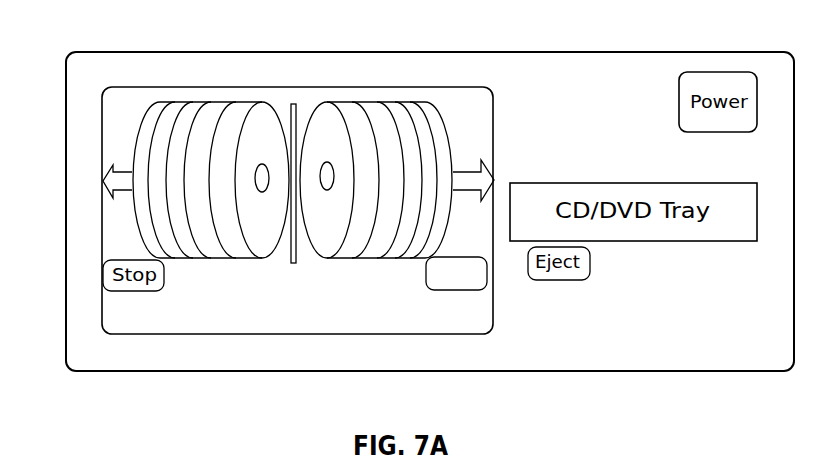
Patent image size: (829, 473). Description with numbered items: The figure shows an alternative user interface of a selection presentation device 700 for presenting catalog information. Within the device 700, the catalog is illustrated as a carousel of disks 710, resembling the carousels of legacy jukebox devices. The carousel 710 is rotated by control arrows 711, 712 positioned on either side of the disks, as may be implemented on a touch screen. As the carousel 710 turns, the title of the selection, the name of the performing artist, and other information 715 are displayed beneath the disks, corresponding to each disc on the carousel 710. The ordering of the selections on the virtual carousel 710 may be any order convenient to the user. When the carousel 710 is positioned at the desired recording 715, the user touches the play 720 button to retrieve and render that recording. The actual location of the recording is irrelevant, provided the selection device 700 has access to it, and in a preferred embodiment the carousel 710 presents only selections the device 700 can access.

The selection presentation device 700 is at (85, 354).
The carousel of disks 710 is at (308, 108).
The control arrow 711 is at (107, 180).
The control arrow 712 is at (491, 172).
The title, artist and other information 715 is at (293, 325).
The play button 720 is at (460, 290).